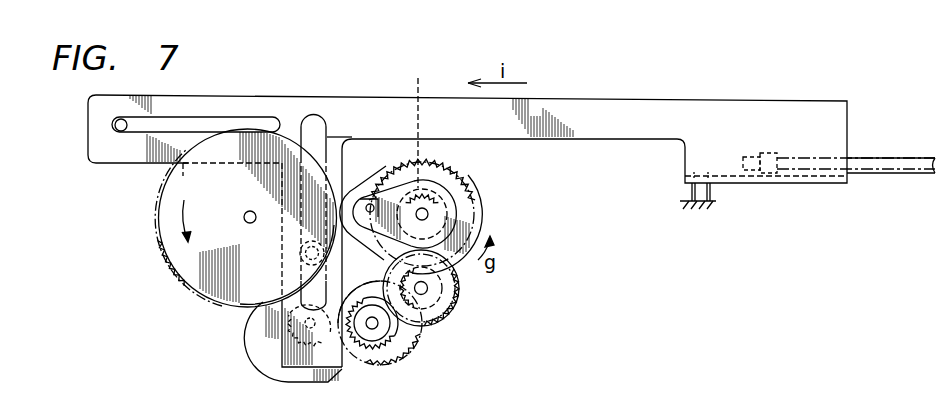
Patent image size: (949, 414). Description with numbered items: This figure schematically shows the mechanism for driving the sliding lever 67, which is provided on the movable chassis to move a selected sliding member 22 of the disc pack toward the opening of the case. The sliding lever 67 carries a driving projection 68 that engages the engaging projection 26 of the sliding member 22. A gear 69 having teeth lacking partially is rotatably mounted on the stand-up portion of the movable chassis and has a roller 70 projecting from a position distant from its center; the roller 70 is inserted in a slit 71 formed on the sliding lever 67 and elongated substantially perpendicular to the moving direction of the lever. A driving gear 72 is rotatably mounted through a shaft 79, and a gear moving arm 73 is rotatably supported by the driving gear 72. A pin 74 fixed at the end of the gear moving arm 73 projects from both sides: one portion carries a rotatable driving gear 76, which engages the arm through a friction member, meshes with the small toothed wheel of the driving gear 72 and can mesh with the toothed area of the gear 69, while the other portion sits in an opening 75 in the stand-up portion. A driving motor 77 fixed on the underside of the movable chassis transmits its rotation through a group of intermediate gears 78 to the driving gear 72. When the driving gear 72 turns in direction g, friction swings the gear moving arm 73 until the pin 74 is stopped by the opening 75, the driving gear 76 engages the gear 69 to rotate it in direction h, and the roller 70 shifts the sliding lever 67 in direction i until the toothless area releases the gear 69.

The sliding member 22 is at (905, 160).
The engaging projection 26 is at (745, 157).
The sliding lever 67 is at (617, 143).
The driving projection 68 is at (777, 153).
The gear having teeth lacking partially 69 is at (166, 190).
The roller 70 is at (300, 259).
The slit 71 is at (311, 118).
The driving gear 72 is at (472, 212).
The gear moving arm 73 is at (452, 199).
The pin 74 is at (370, 203).
The opening 75 is at (348, 287).
The driving gear 76 is at (348, 139).
The driving motor 77 is at (263, 348).
The group of intermediate gears 78 is at (426, 343).
The shaft 79 is at (428, 216).